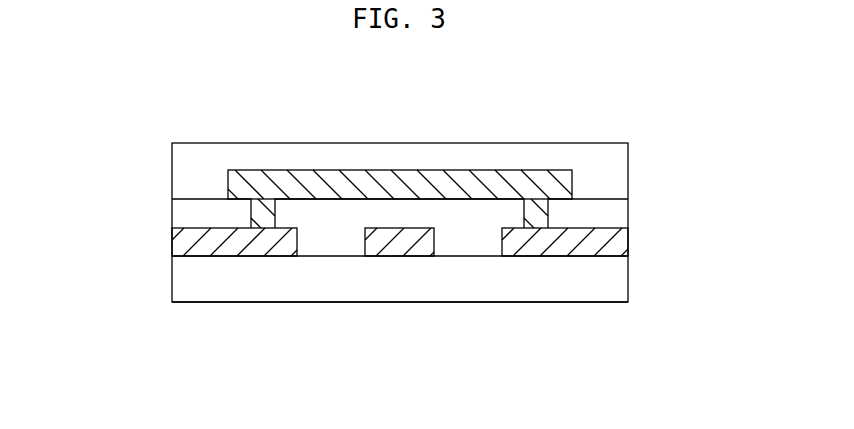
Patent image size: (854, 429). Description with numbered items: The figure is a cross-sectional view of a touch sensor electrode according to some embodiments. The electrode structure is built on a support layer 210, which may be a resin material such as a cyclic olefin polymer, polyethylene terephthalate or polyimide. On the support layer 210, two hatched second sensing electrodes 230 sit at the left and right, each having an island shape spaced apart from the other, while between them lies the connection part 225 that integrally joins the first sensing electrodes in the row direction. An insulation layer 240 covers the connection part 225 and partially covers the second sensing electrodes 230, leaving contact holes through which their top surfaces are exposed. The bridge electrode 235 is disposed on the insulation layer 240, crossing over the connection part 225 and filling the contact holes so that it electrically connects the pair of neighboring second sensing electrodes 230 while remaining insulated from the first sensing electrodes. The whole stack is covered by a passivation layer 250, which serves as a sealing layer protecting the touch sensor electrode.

The support layer 210 is at (628, 278).
The connection part 225 is at (410, 253).
The second sensing electrodes 230 is at (180, 237).
The bridge electrode 235 is at (466, 178).
The insulation layer 240 is at (180, 211).
The passivation layer 250 is at (597, 150).